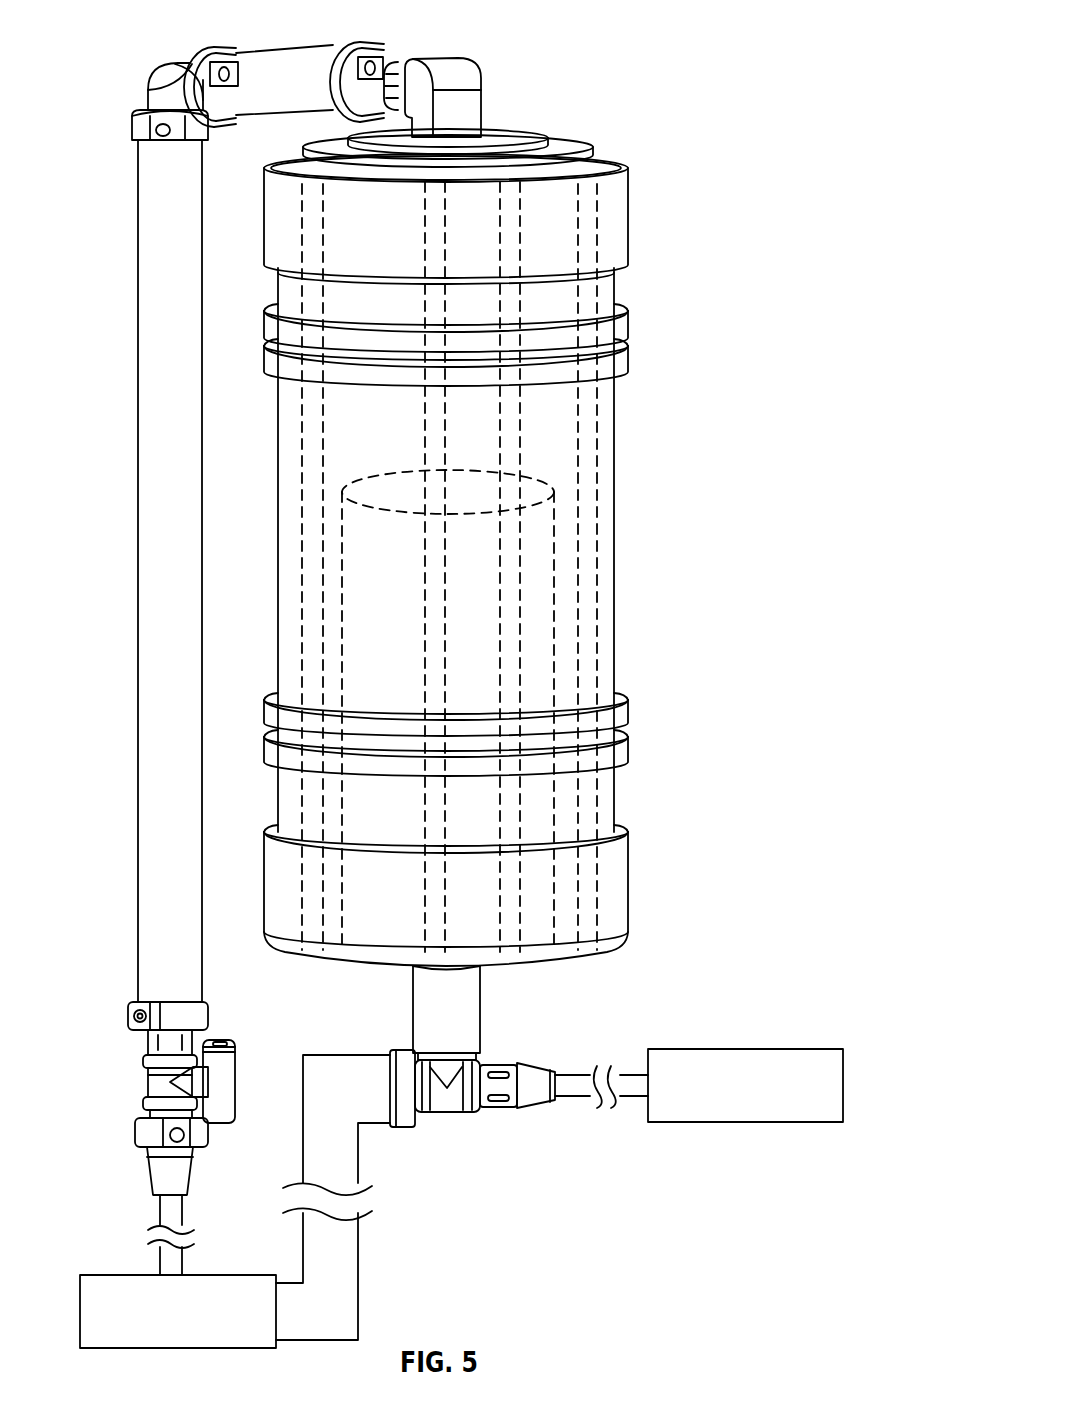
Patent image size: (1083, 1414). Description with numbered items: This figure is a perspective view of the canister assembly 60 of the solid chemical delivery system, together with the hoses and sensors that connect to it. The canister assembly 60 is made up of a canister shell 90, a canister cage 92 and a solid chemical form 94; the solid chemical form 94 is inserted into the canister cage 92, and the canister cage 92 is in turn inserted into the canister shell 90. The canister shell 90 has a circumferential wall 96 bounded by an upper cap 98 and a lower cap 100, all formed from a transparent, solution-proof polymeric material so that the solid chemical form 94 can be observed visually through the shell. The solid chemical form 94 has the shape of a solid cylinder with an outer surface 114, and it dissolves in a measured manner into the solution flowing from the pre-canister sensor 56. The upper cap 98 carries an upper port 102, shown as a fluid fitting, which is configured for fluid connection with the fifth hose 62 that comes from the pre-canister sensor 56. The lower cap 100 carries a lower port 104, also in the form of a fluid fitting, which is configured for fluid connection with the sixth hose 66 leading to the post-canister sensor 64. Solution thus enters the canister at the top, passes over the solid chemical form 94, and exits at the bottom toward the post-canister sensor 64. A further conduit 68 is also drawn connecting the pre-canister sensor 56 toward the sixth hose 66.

The pre-canister sensor 56 is at (131, 1275).
The canister assembly 60 is at (653, 28).
The fifth hose 62 is at (138, 250).
The post-canister sensor 64 is at (795, 1048).
The sixth hose 66 is at (570, 1100).
The outlet conduit 68 is at (302, 1072).
The canister shell 90 is at (616, 498).
The canister cage 92 is at (301, 472).
The solid chemical form 94 is at (553, 588).
The circumferential wall 96 is at (615, 436).
The upper cap 98 is at (628, 213).
The lower cap 100 is at (628, 900).
The upper port 102 is at (485, 110).
The lower port 104 is at (481, 1011).
The outer surface 114 is at (322, 566).